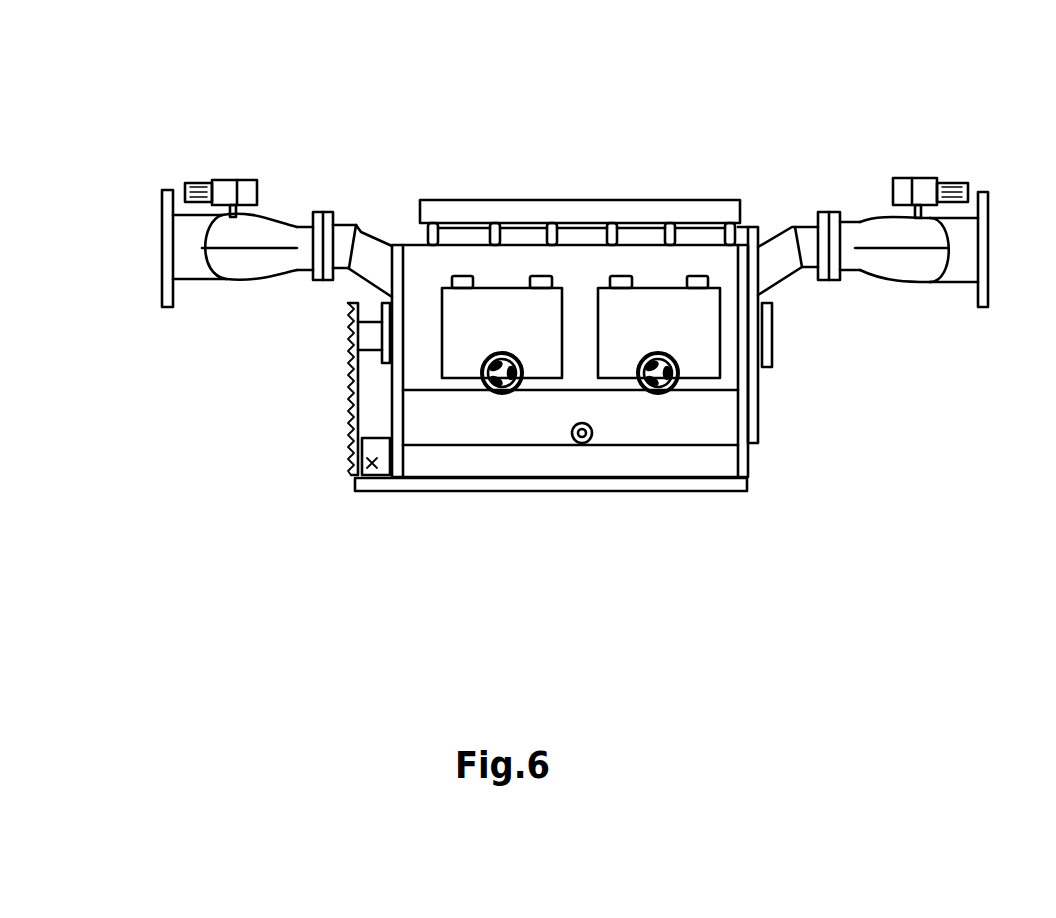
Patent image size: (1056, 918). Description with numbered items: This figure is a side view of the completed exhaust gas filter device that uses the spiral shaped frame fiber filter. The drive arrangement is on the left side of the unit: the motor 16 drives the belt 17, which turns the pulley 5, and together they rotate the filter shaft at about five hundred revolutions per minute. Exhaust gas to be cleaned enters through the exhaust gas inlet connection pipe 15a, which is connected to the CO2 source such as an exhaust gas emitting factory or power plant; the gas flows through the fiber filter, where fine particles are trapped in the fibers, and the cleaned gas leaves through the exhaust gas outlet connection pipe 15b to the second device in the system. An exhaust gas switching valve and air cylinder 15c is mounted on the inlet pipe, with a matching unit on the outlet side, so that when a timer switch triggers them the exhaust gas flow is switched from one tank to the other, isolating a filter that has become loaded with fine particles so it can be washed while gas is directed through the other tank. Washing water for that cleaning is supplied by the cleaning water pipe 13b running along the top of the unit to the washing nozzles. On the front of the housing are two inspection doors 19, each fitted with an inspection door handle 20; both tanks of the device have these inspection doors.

The pulley 5 is at (347, 340).
The cleaning water pipe 13b is at (524, 200).
The exhaust gas inlet connection pipe 15a is at (162, 248).
The exhaust gas outlet connection pipe 15b is at (987, 195).
The exhaust gas switching valve and air cylinder 15c is at (250, 180).
The motor 16 is at (363, 480).
The belt 17 is at (347, 392).
The inspection door 19 is at (536, 332).
The inspection door handle 20 is at (667, 390).